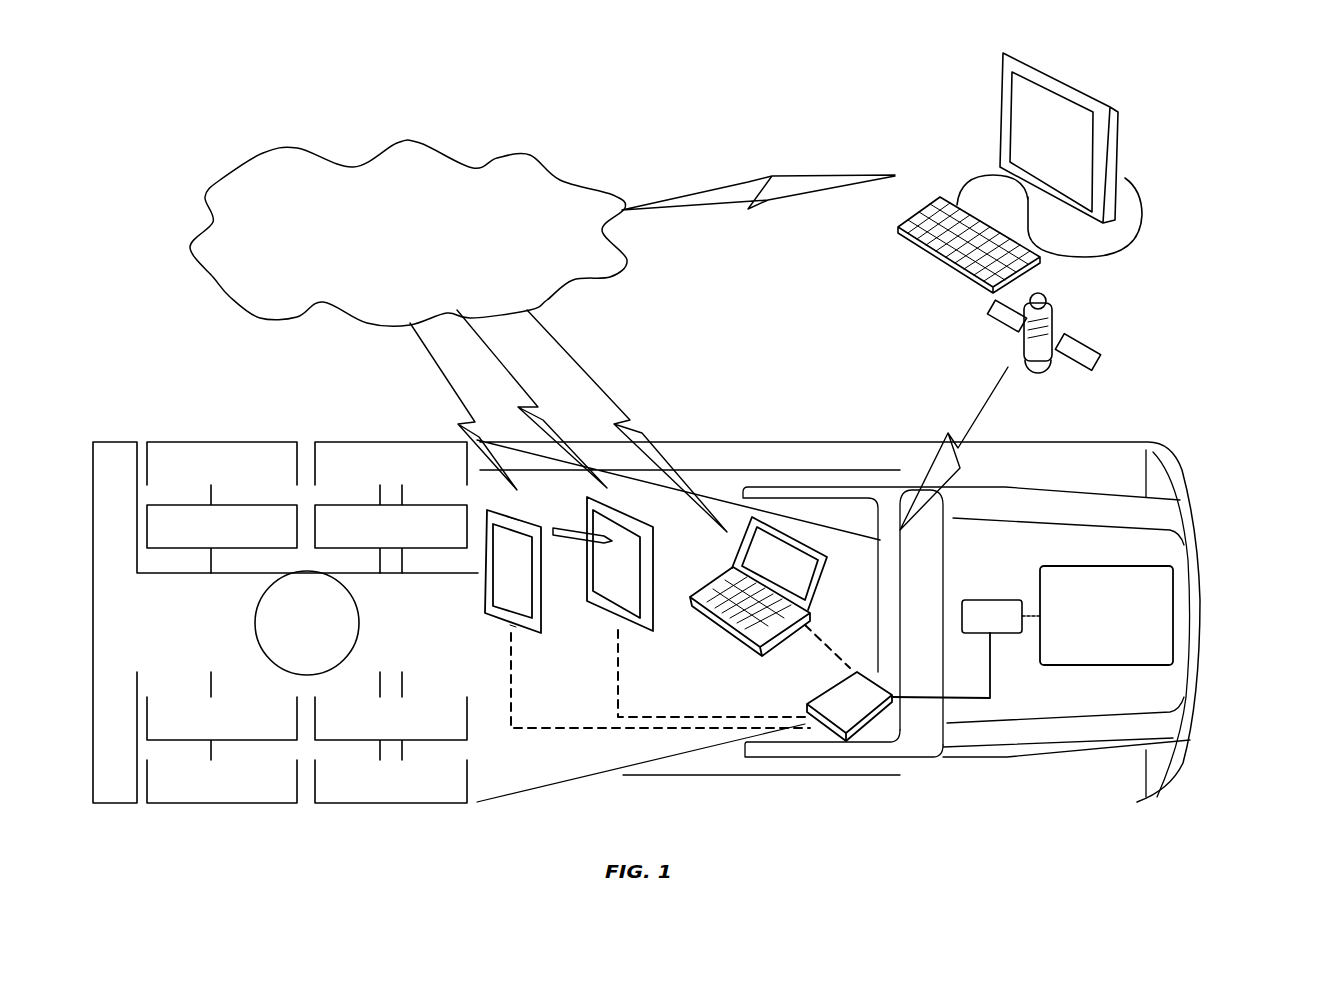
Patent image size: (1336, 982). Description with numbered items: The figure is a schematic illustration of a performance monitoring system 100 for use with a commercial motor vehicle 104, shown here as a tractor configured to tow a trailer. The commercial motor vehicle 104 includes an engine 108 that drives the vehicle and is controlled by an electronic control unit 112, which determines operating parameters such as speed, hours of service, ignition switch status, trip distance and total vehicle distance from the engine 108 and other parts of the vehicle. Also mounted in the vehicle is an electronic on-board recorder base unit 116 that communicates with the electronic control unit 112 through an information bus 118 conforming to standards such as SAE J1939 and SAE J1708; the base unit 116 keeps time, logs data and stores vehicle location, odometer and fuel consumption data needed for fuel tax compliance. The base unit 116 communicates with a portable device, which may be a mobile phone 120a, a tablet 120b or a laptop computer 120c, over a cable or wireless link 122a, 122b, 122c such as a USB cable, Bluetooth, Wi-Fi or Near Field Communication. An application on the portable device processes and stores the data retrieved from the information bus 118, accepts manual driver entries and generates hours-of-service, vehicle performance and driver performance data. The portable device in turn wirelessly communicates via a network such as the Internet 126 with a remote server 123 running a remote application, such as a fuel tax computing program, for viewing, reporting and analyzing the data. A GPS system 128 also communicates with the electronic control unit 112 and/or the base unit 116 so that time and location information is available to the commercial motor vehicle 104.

The performance monitoring system 100 is at (1202, 100).
The commercial motor vehicle 104 is at (1095, 440).
The engine 108 is at (1105, 665).
The electronic control unit 112 is at (1008, 600).
The electronic on-board recorder base unit 116 is at (812, 700).
The information bus 118 is at (998, 690).
The mobile phone 120a is at (503, 628).
The tablet 120b is at (657, 563).
The laptop computer 120c is at (812, 603).
The cable or wireless link 122a is at (532, 732).
The cable or wireless link 122b is at (685, 714).
The cable or wireless link 122c is at (822, 645).
The remote server 123 is at (997, 118).
The internet network 126 is at (597, 283).
The GPS system 128 is at (1090, 330).